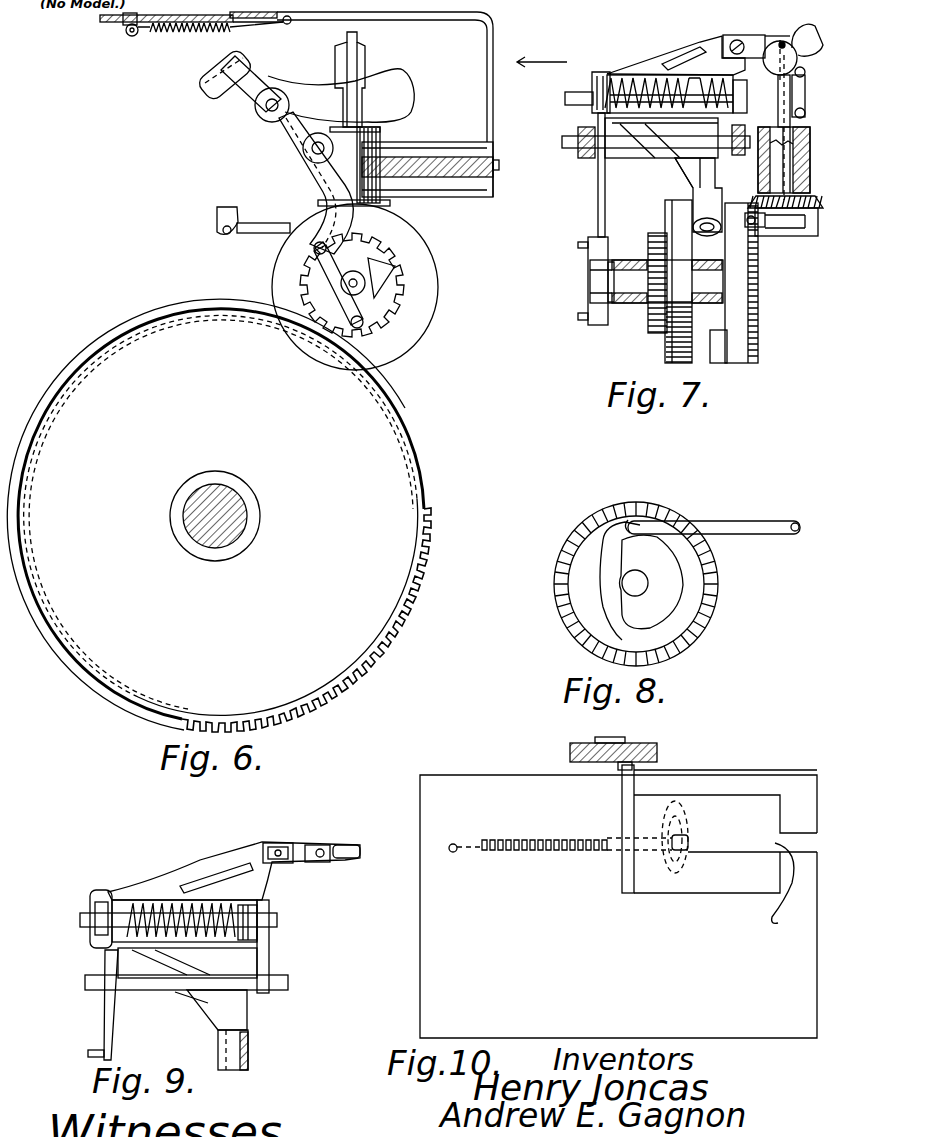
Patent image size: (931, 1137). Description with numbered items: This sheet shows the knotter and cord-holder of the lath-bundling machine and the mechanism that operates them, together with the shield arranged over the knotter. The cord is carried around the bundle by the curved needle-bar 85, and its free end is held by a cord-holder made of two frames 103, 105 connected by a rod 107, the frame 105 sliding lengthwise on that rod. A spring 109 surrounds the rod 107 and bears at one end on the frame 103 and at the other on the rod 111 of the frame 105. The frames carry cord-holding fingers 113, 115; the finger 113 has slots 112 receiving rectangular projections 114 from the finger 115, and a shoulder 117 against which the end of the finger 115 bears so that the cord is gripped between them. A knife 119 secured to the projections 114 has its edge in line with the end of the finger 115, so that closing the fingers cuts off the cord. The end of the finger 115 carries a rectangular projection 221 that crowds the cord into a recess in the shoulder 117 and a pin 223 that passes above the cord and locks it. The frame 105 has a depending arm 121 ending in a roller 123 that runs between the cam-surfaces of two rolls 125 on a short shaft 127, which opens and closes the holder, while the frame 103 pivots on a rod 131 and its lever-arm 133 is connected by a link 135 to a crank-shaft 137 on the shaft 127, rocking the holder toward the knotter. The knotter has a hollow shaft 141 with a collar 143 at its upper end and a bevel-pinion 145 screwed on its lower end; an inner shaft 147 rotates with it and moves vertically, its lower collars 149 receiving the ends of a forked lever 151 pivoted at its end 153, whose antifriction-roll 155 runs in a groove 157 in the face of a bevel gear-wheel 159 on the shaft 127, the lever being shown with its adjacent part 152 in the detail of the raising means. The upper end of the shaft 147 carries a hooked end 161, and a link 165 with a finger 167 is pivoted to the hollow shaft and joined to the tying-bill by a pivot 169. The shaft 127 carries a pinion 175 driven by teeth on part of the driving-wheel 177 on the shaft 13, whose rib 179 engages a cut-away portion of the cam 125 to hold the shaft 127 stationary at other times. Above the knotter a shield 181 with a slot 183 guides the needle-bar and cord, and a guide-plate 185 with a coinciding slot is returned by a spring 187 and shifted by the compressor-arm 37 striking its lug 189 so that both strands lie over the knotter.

In FIG. 6, the shaft 13 is at (234, 526).
In FIG. 10, the hatched block 37 is at (575, 745).
In FIG. 6, the needle-bar 85 is at (390, 90).
In FIG. 6, the frame 103 is at (250, 70).
In FIG. 7, the frame 103 is at (729, 81).
In FIG. 9, the frame 103 is at (267, 893).
In FIG. 6, the frame 105 is at (227, 90).
In FIG. 9, the frame 105 is at (105, 893).
In FIG. 6, the rod 107 is at (258, 112).
In FIG. 7, the rod 107 is at (572, 97).
In FIG. 9, the rod 107 is at (270, 920).
In FIG. 7, the spring 109 is at (620, 83).
In FIG. 9, the spring 109 is at (158, 898).
In FIG. 7, the rod 111 is at (716, 92).
In FIG. 9, the rod 111 is at (267, 930).
In FIG. 9, the slots 112 is at (315, 845).
In FIG. 9, the cord-holding finger 113 is at (347, 847).
In FIG. 9, the rectangular projections 114 is at (273, 847).
In FIG. 9, the cord-holding finger 115 is at (322, 843).
In FIG. 9, the shoulder 117 is at (333, 850).
In FIG. 7, the knife 119 is at (746, 37).
In FIG. 6, the depending arm 121 is at (320, 180).
In FIG. 7, the depending arm 121 is at (715, 172).
In FIG. 9, the depending arm 121 is at (243, 1010).
In FIG. 6, the roller 123 is at (393, 207).
In FIG. 7, the roller 123 is at (693, 205).
In FIG. 9, the roller 123 is at (250, 1045).
In FIG. 6, the cam rolls 125 is at (428, 330).
In FIG. 7, the cam rolls 125 is at (665, 207).
In FIG. 6, the short shaft 127 is at (357, 285).
In FIG. 7, the short shaft 127 is at (622, 282).
In FIG. 6, the rod or short shaft 131 is at (305, 150).
In FIG. 7, the rod or short shaft 131 is at (562, 147).
In FIG. 6, the lever-arm 133 is at (333, 205).
In FIG. 7, the lever-arm 133 is at (597, 203).
In FIG. 9, the lever-arm 133 is at (113, 1020).
In FIG. 6, the link 135 is at (335, 283).
In FIG. 7, the link 135 is at (598, 265).
In FIG. 6, the crank-shaft 137 is at (365, 326).
In FIG. 7, the crank-shaft 137 is at (603, 287).
In FIG. 9, the crank-shaft 137 is at (290, 980).
In FIG. 7, the hollow shaft 141 is at (800, 173).
In FIG. 7, the collar 143 is at (768, 127).
In FIG. 7, the bevel-pinion 145 is at (777, 230).
In FIG. 6, the shaft 147 is at (378, 108).
In FIG. 7, the shaft 147 is at (787, 170).
In FIG. 7, the collars 149 is at (773, 240).
In FIG. 7, the forked lever 151 is at (750, 227).
In FIG. 8, the pawl lever 152 is at (600, 535).
In FIG. 8, the pivot end 153 is at (795, 522).
In FIG. 8, the antifriction-roll 155 is at (650, 520).
In FIG. 7, the groove 157 is at (763, 233).
In FIG. 8, the groove 157 is at (730, 522).
In FIG. 7, the bevel gear-wheel 159 is at (757, 330).
In FIG. 8, the bevel gear-wheel 159 is at (555, 583).
In FIG. 7, the hooked end 161 is at (790, 30).
In FIG. 7, the link 165 is at (806, 98).
In FIG. 7, the finger 167 is at (792, 68).
In FIG. 7, the pivot 169 is at (815, 77).
In FIG. 6, the pinion 175 is at (395, 297).
In FIG. 7, the pinion 175 is at (653, 325).
In FIG. 6, the driving-wheel 177 is at (408, 522).
In FIG. 6, the rib 179 is at (390, 436).
In FIG. 10, the shield 181 is at (618, 906).
In FIG. 10, the slot 183 is at (794, 885).
In FIG. 6, the guide-plate 185 is at (277, 25).
In FIG. 10, the guide-plate 185 is at (594, 842).
In FIG. 6, the spring 187 is at (105, 22).
In FIG. 7, the spring 187 is at (500, 30).
In FIG. 10, the lug 189 is at (643, 772).
In FIG. 9, the projection 221 is at (350, 850).
In FIG. 9, the pin or cylindrical projection 223 is at (333, 843).